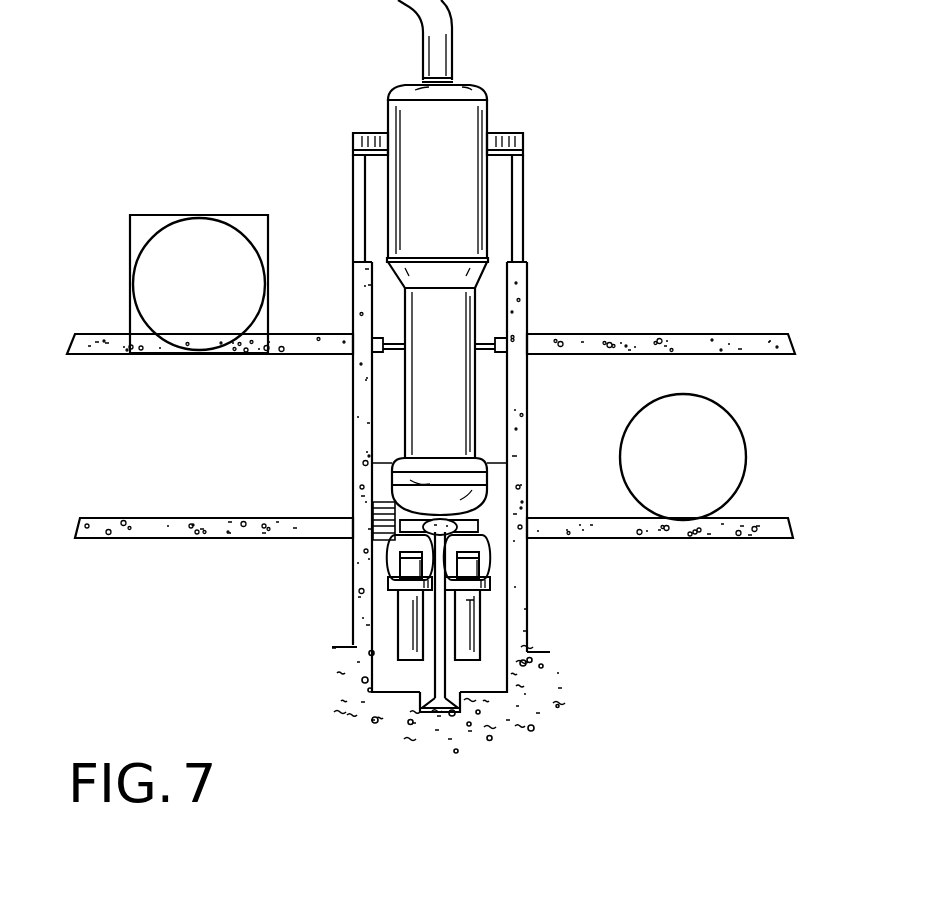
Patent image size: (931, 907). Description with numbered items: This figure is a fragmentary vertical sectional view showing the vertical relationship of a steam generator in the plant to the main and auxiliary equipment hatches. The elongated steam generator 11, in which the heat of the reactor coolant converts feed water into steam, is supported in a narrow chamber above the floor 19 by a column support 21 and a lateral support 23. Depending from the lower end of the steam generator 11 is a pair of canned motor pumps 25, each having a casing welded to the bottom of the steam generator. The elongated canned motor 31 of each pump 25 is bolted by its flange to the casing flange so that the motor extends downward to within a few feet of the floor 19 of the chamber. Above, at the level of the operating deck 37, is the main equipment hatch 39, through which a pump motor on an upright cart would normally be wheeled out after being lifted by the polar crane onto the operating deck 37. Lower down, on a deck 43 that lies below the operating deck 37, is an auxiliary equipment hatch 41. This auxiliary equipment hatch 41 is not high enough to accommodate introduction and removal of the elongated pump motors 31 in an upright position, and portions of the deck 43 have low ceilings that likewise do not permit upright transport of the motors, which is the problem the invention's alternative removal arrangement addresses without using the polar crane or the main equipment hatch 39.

The steam generator 11 is at (490, 215).
The floor 19 is at (478, 690).
The column support 21 is at (435, 666).
The lateral support 23 is at (378, 356).
The canned motor pump 25 is at (388, 598).
The canned motor 31 is at (410, 616).
The operating deck 37 is at (655, 334).
The main equipment hatch 39 is at (203, 230).
The auxiliary equipment hatch 41 is at (705, 473).
The deck 43 is at (190, 518).